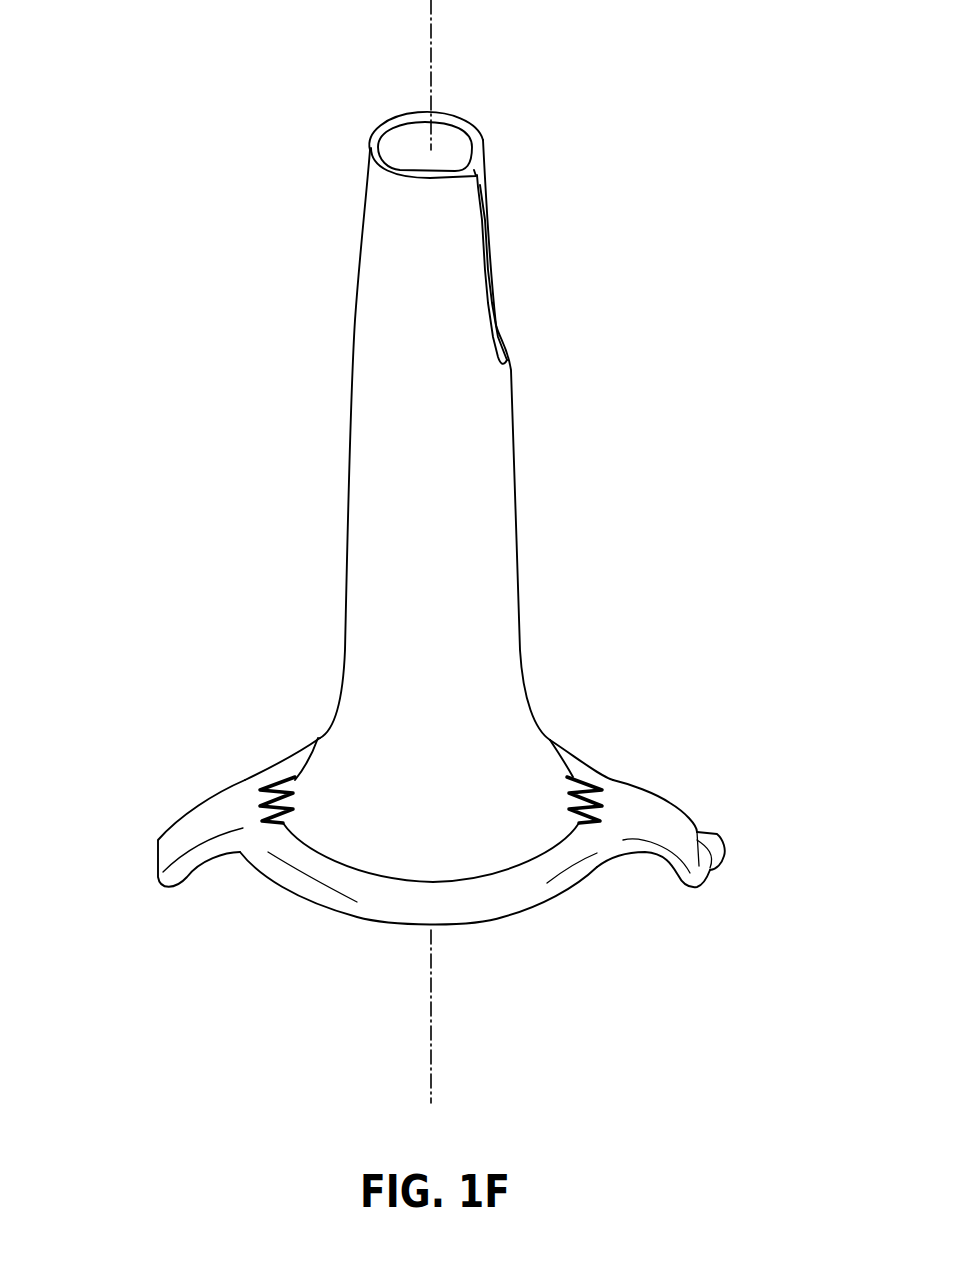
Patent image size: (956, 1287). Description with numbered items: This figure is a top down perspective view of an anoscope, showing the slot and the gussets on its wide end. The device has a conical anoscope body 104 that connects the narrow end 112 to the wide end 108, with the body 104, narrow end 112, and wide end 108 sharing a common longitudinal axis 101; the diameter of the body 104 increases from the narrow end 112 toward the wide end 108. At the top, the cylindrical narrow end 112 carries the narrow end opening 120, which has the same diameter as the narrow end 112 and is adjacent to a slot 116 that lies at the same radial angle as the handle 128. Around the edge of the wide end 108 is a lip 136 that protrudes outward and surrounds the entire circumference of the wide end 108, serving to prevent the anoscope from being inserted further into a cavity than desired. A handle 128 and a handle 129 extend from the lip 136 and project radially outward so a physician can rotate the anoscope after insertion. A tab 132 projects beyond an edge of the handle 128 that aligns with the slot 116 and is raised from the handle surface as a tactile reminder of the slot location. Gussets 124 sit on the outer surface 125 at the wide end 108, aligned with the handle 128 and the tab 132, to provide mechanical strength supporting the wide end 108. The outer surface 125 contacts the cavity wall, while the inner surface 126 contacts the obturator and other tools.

The narrow end opening 120 is at (399, 96).
The longitudinal axis 101 is at (431, 1053).
The anoscope body 104 is at (380, 455).
The narrow end 112 is at (373, 178).
The inner surface 126 is at (440, 145).
The slot 116 is at (490, 273).
The outer surface 125 is at (350, 722).
The gussets 124 is at (275, 788).
The wide end 108 is at (390, 858).
The lip 136 is at (548, 885).
The handle 129 is at (170, 842).
The handle 128 is at (650, 807).
The tab 132 is at (725, 848).